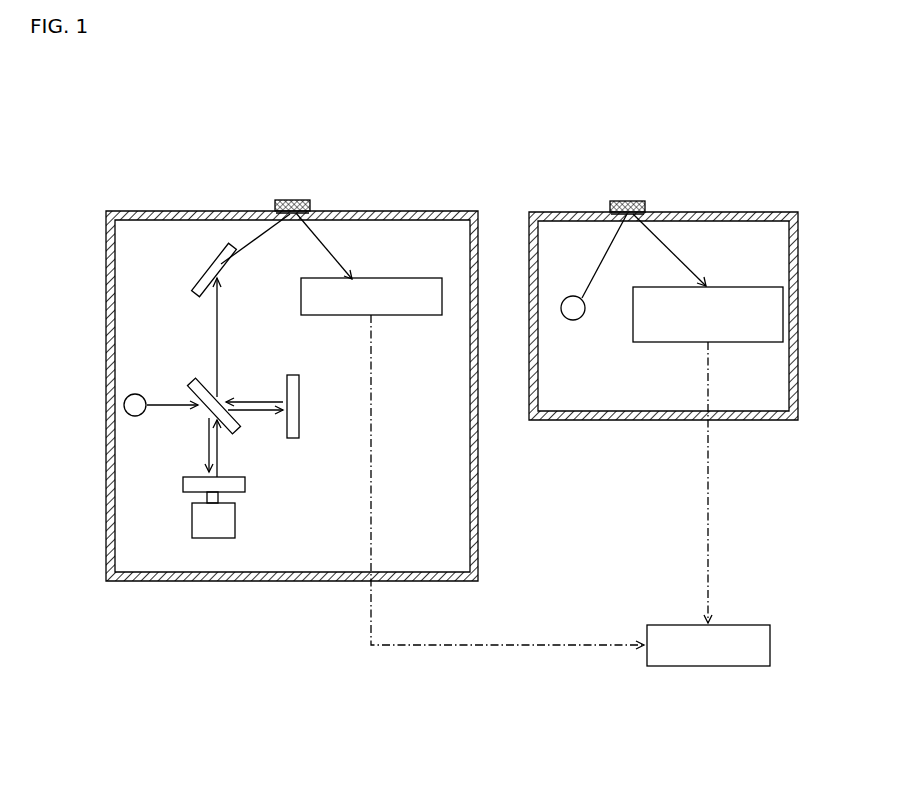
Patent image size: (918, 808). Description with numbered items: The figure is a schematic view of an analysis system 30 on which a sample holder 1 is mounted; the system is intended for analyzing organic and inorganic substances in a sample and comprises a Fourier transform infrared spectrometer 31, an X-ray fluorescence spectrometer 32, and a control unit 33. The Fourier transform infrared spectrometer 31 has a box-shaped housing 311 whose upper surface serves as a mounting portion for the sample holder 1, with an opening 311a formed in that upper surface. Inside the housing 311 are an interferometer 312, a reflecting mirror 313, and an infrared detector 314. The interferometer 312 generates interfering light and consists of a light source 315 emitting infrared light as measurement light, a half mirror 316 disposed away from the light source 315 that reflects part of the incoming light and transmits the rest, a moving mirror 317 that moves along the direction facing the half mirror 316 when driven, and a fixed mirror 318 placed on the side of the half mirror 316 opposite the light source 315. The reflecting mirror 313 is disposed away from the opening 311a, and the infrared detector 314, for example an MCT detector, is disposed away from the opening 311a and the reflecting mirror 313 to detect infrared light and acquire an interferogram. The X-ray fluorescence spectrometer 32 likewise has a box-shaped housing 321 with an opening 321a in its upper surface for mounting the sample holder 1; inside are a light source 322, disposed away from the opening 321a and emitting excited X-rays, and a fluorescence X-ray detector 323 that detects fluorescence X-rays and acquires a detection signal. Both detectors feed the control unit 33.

The sample holder 1 is at (292, 200).
The analysis system 30 is at (602, 116).
The Fourier transform infrared spectrometer 31 is at (431, 177).
The housing 311 is at (147, 211).
The opening 311a is at (310, 205).
The interferometer 312 is at (237, 377).
The reflecting mirror 313 is at (212, 263).
The infrared detector 314 is at (420, 278).
The light source 315 is at (135, 394).
The half mirror 316 is at (200, 383).
The moving mirror 317 is at (246, 490).
The fixed mirror 318 is at (299, 396).
The X-ray fluorescence spectrometer 32 is at (736, 180).
The housing 321 is at (561, 212).
The opening 321a is at (645, 205).
The light source 322 is at (573, 320).
The fluorescence X-ray detector 323 is at (677, 342).
The control unit 33 is at (712, 666).